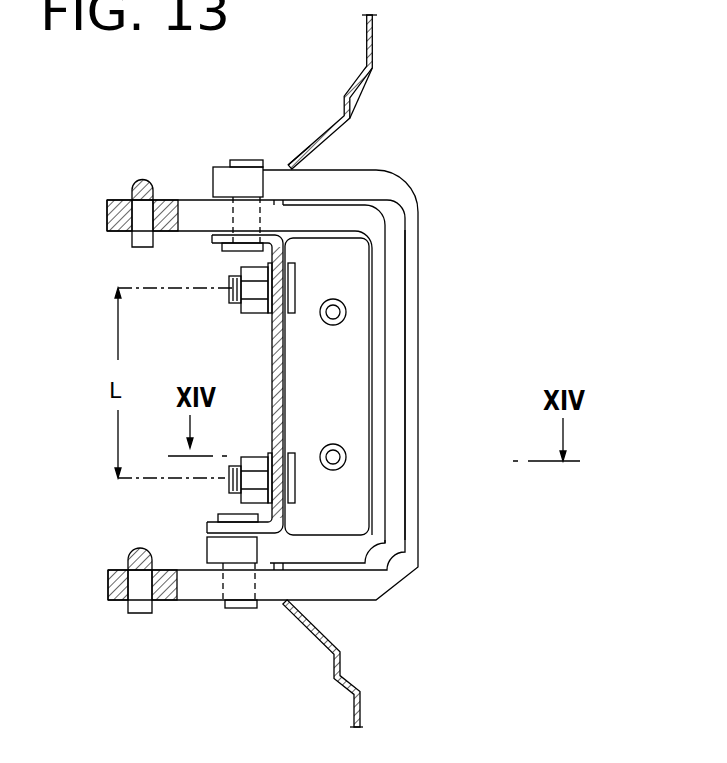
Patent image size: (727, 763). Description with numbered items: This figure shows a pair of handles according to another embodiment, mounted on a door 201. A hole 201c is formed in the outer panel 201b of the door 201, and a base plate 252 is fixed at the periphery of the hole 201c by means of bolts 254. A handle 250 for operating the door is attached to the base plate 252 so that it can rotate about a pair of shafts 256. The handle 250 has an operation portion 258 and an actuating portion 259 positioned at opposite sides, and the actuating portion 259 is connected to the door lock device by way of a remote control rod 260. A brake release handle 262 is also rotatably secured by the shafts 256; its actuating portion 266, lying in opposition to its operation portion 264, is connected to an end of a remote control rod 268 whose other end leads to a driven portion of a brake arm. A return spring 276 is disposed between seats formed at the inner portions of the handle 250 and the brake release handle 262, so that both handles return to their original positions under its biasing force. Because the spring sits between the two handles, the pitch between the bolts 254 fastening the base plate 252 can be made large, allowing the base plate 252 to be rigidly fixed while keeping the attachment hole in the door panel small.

The door 201 is at (366, 51).
The outer panel 201b is at (326, 130).
The hole 201c is at (290, 165).
The handle 250 is at (420, 325).
The base plate 252 is at (285, 362).
The bolts 254 is at (295, 290).
The shafts 256 is at (228, 251).
The operation portion 258 is at (417, 412).
The actuating portion 259 is at (165, 600).
The remote control rod 260 is at (128, 552).
The brake release handle 262 is at (388, 290).
The operation portion 264 is at (400, 503).
The actuating portion 266 is at (107, 218).
The remote control rod 268 is at (141, 180).
The return spring 276 is at (345, 305).